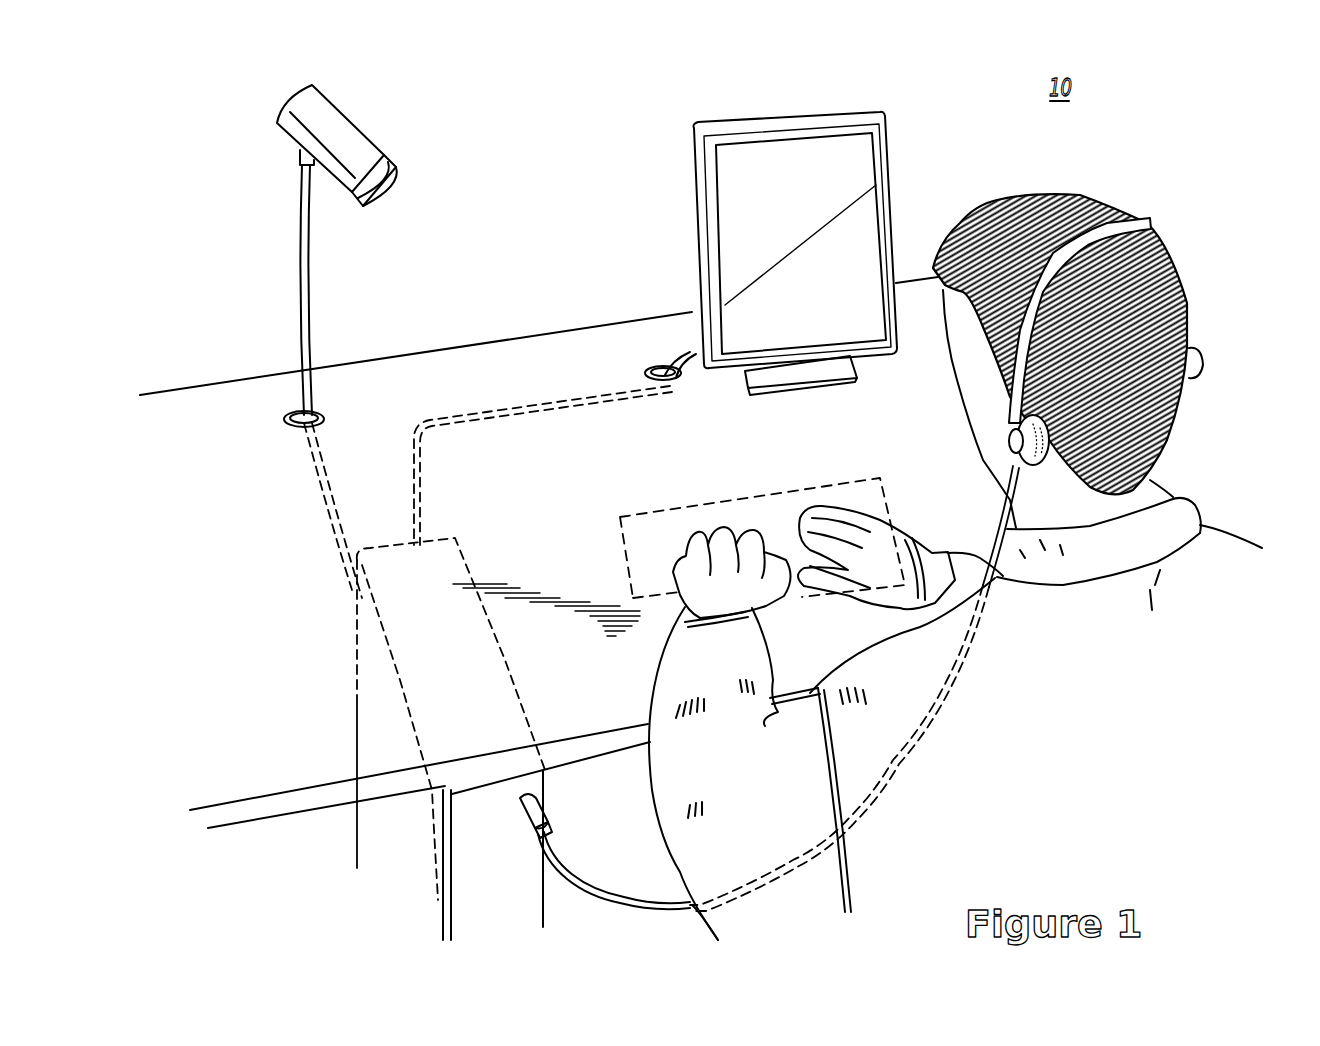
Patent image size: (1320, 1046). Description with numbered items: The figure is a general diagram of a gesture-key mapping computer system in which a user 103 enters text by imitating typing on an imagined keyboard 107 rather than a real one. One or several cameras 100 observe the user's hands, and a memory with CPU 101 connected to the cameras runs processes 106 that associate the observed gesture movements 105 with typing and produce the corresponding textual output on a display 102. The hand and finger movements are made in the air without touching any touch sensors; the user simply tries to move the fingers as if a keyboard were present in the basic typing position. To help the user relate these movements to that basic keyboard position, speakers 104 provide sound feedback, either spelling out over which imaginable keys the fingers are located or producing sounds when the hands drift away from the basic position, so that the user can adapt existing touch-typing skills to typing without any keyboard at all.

The camera 100 is at (338, 212).
The memory with CPU 101 is at (546, 806).
The display 102 is at (908, 192).
The user 103 is at (1181, 228).
The speakers 104 is at (1200, 360).
The gesture movements 105 is at (764, 512).
The processes 106 is at (380, 848).
The keyboard 107 is at (632, 506).